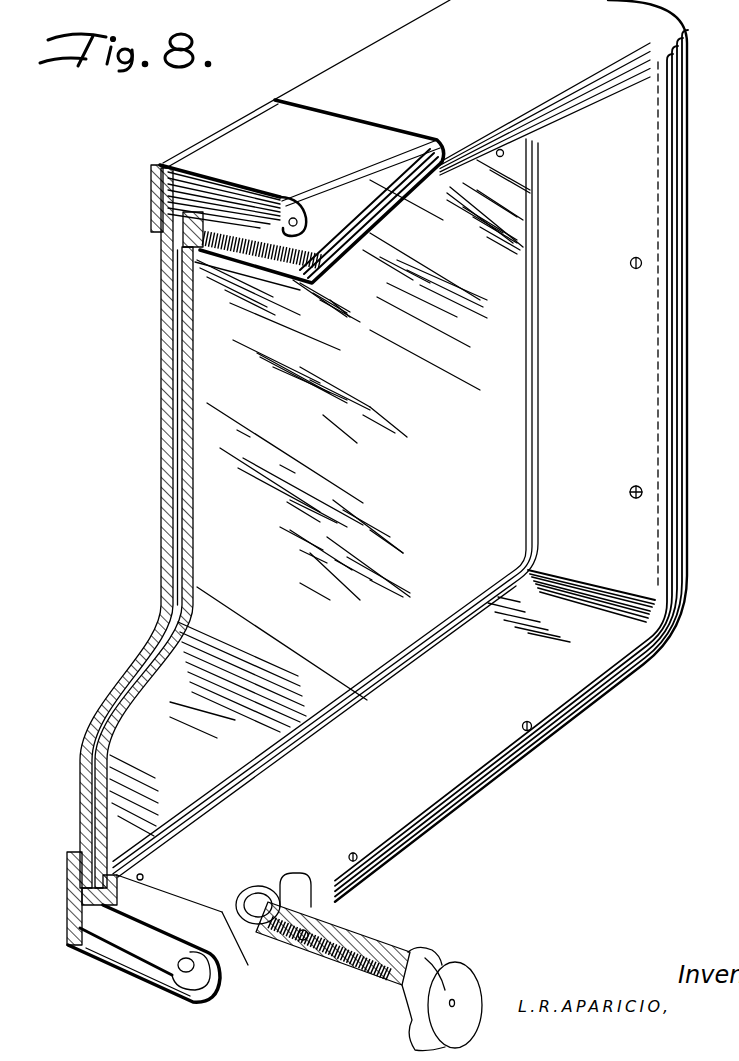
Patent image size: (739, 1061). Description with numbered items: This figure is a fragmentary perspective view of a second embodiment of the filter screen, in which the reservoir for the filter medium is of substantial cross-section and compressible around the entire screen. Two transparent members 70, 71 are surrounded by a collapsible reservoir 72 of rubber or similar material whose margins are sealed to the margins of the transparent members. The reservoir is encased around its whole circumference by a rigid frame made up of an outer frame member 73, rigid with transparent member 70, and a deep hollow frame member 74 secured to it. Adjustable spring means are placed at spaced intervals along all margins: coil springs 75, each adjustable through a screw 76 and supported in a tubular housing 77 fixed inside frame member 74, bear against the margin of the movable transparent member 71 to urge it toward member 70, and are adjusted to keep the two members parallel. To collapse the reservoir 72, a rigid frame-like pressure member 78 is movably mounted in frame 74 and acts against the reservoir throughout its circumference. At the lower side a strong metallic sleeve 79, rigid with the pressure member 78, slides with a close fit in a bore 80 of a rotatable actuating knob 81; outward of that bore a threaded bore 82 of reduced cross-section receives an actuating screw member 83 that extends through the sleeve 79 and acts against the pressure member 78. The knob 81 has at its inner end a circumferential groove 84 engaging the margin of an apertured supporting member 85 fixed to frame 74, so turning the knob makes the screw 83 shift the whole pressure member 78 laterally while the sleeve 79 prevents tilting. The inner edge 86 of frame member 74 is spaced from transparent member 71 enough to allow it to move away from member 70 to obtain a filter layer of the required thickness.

The transparent member 70 is at (162, 540).
The transparent member 71 is at (186, 582).
The collapsible reservoir 72 is at (245, 133).
The outer frame member 73 is at (158, 163).
The deep hollow frame member 74 is at (365, 50).
The coil springs 75 is at (203, 252).
The screw 76 is at (643, 492).
The tubular housing 77 is at (287, 262).
The pressure member 78 is at (180, 978).
The sleeve 79 is at (263, 898).
The bore 80 is at (303, 942).
The actuating knob 81 is at (358, 950).
The threaded bore 82 is at (358, 972).
The actuating screw member 83 is at (295, 930).
The circumferential groove 84 is at (296, 895).
The apertured supporting member 85 is at (217, 867).
The inner edge 86 is at (253, 788).